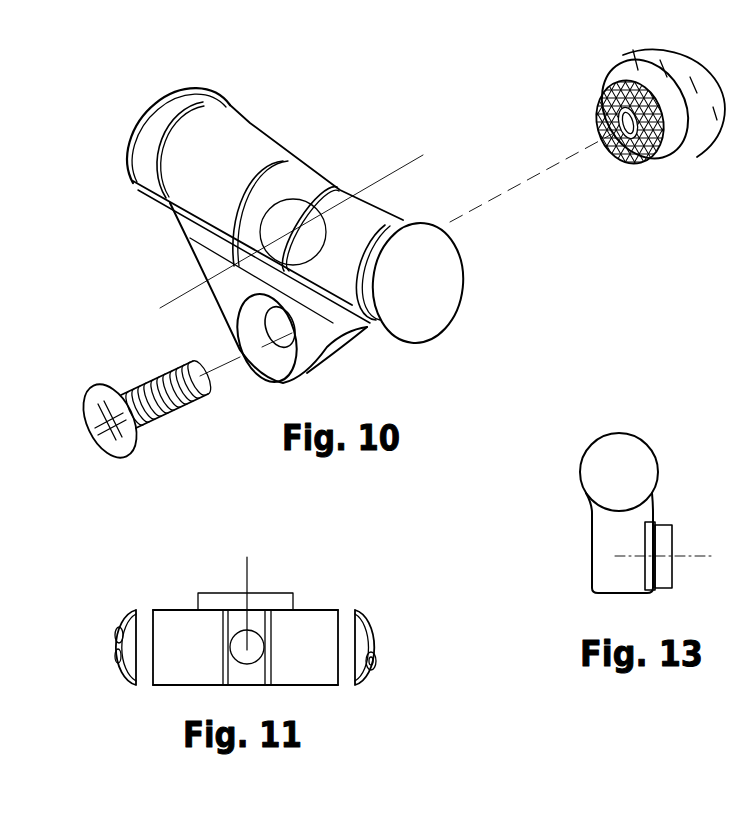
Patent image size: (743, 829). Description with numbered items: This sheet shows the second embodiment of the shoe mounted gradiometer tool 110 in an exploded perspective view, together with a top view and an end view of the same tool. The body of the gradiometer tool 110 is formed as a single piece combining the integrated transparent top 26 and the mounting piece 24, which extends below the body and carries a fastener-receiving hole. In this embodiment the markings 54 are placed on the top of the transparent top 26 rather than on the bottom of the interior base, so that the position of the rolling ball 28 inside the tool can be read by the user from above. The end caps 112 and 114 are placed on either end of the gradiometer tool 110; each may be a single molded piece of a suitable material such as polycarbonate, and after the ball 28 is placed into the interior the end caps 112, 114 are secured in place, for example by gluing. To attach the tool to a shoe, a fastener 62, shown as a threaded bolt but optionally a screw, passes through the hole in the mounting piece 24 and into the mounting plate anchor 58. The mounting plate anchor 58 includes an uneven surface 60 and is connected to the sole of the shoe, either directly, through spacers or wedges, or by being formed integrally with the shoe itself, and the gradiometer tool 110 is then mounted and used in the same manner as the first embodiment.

In FIG. 10, the shoe mounted gradiometer tool 110 is at (126, 97).
In FIG. 10, the markings 54 is at (255, 177).
In FIG. 10, the transparent top 26 is at (300, 177).
In FIG. 13, the transparent top 26 is at (640, 594).
In FIG. 10, the rolling ball 28 is at (308, 224).
In FIG. 11, the rolling ball 28 is at (257, 630).
In FIG. 10, the end cap 112 is at (447, 253).
In FIG. 11, the end cap 112 is at (372, 630).
In FIG. 13, the end cap 112 is at (633, 452).
In FIG. 10, the mounting piece 24 is at (343, 350).
In FIG. 10, the fastener 62 is at (124, 450).
In FIG. 10, the end cap 114 is at (664, 133).
In FIG. 10, the uneven surface 60 is at (634, 158).
In FIG. 11, the mounting plate anchor 58 is at (217, 593).
In FIG. 13, the mounting plate anchor 58 is at (673, 535).